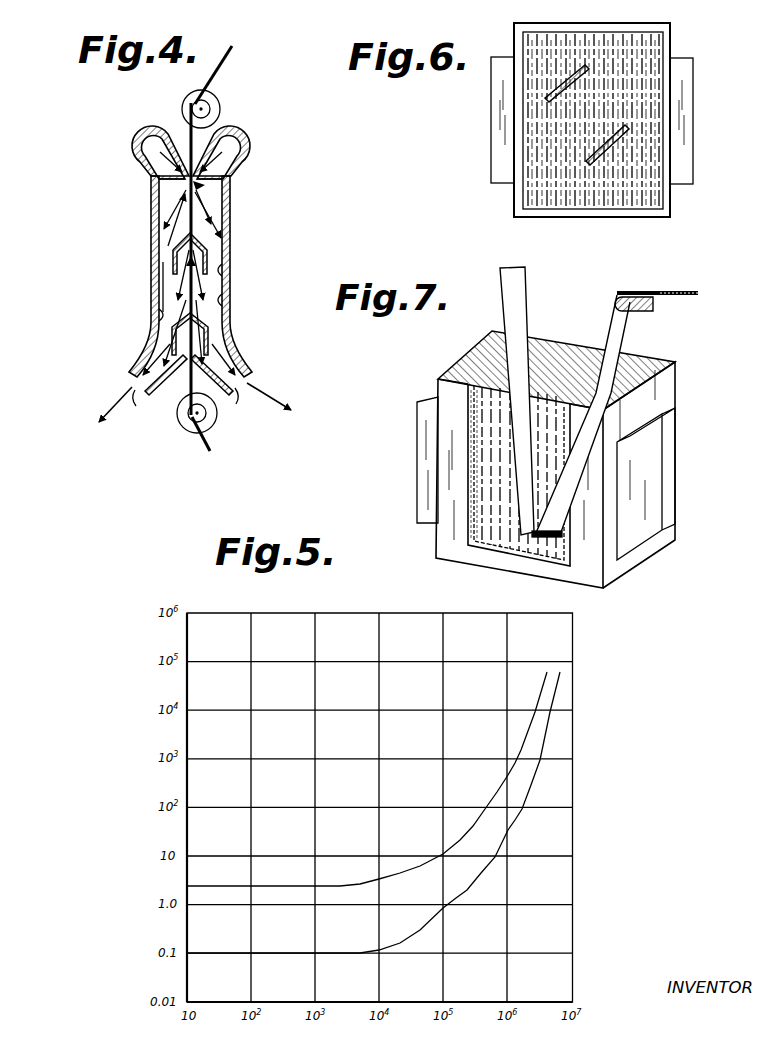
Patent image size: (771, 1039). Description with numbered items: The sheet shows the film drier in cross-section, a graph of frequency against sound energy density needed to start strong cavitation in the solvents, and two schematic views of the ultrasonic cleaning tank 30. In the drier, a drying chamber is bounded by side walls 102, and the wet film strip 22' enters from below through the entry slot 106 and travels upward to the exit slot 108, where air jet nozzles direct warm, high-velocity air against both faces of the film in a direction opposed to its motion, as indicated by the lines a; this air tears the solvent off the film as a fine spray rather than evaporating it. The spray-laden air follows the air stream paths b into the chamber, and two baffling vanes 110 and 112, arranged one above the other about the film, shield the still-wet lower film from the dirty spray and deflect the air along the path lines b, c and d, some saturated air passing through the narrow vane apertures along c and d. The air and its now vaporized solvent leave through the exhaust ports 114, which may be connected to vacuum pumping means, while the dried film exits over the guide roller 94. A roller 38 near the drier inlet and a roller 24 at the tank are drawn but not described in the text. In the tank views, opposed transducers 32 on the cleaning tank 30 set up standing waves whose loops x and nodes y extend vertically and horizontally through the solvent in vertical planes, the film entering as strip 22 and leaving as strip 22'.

In FIG. 4, the guide roller 94 is at (218, 108).
In FIG. 4, the exit slot 108 is at (208, 185).
In FIG. 4, the air stream paths b is at (172, 222).
In FIG. 4, the baffling vane 110 is at (172, 251).
In FIG. 4, the side walls 102 is at (232, 240).
In FIG. 4, the air flow path line d is at (218, 294).
In FIG. 4, the air flow path line c is at (197, 298).
In FIG. 4, the baffling vane 112 is at (171, 340).
In FIG. 4, the entry slot 106 is at (189, 377).
In FIG. 4, the exhaust ports 114 is at (95, 403).
In FIG. 4, the lower roller 38 is at (206, 421).
In FIG. 4, the film strip 22' is at (190, 445).
In FIG. 7, the film strip 22' is at (497, 401).
In FIG. 4, the air jet direction lines a is at (190, 150).
In FIG. 6, the film strip 22 is at (587, 112).
In FIG. 7, the film strip 22 is at (615, 415).
In FIG. 6, the transducers 32 is at (491, 147).
In FIG. 7, the transducers 32 is at (432, 453).
In FIG. 6, the cleaning tank 30 is at (513, 200).
In FIG. 7, the cleaning tank 30 is at (447, 558).
In FIG. 7, the roller 24 is at (656, 306).
In FIG. 6, the loops of sound energy x is at (580, 32).
In FIG. 7, the loops of sound energy x is at (566, 340).
In FIG. 6, the nodes of sound energy y is at (585, 32).
In FIG. 7, the nodes of sound energy y is at (582, 340).